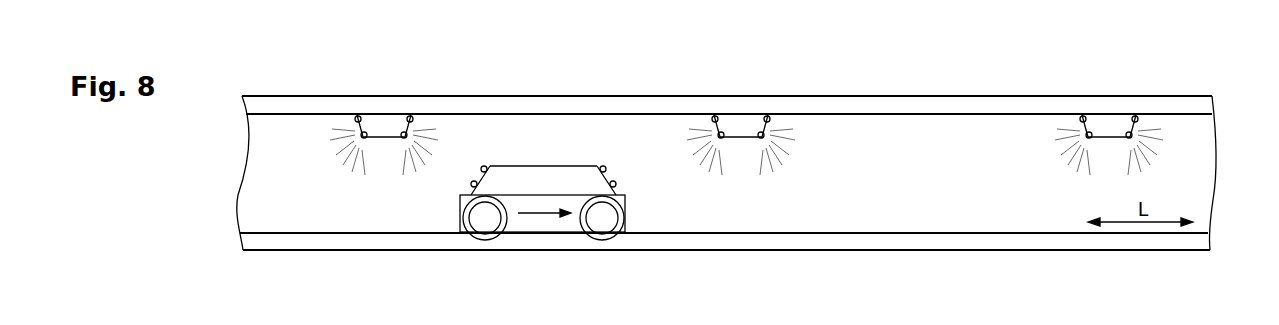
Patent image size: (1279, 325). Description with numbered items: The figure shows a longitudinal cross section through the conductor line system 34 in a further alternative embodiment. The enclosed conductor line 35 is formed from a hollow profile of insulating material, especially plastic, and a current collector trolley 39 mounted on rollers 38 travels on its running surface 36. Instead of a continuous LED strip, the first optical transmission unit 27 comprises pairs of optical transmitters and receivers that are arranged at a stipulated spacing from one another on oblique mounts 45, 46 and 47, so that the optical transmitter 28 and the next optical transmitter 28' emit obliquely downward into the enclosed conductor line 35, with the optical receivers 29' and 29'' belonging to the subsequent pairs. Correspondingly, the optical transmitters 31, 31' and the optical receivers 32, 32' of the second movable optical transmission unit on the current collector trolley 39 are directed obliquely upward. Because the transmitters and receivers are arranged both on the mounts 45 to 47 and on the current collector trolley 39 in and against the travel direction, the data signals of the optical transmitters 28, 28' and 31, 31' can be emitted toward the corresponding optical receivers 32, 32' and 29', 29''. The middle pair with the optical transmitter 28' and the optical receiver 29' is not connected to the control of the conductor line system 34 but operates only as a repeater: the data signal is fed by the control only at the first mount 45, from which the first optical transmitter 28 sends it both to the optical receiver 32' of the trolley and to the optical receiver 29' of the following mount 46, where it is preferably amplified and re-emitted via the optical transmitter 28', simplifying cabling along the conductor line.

The first optical transmission unit 27 is at (775, 128).
The optical transmitter 28 is at (376, 107).
The optical transmitter 28' is at (750, 106).
The optical receiver 29' is at (703, 80).
The optical receiver 29'' is at (1076, 81).
The optical transmitter 31 is at (592, 106).
The optical transmitter 31' is at (498, 106).
The optical receiver 32 is at (629, 113).
The optical receiver 32' is at (457, 113).
The conductor line system 34 is at (745, 131).
The enclosed conductor line 35 is at (950, 96).
The running surface 36 is at (995, 233).
The rollers 38 is at (598, 222).
The current collector trolley 39 is at (519, 164).
The oblique mount 45 is at (367, 122).
The oblique mount 46 is at (760, 123).
The oblique mount 47 is at (1124, 125).